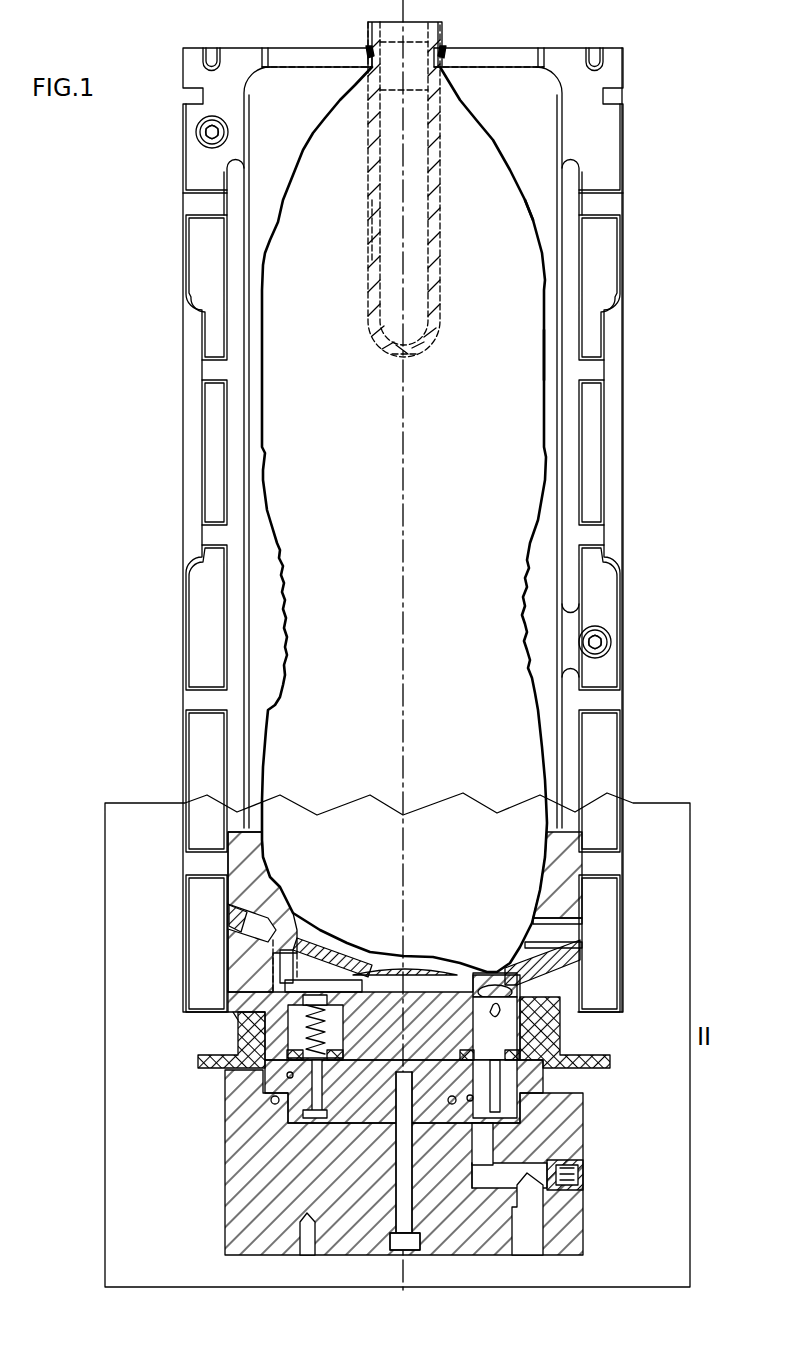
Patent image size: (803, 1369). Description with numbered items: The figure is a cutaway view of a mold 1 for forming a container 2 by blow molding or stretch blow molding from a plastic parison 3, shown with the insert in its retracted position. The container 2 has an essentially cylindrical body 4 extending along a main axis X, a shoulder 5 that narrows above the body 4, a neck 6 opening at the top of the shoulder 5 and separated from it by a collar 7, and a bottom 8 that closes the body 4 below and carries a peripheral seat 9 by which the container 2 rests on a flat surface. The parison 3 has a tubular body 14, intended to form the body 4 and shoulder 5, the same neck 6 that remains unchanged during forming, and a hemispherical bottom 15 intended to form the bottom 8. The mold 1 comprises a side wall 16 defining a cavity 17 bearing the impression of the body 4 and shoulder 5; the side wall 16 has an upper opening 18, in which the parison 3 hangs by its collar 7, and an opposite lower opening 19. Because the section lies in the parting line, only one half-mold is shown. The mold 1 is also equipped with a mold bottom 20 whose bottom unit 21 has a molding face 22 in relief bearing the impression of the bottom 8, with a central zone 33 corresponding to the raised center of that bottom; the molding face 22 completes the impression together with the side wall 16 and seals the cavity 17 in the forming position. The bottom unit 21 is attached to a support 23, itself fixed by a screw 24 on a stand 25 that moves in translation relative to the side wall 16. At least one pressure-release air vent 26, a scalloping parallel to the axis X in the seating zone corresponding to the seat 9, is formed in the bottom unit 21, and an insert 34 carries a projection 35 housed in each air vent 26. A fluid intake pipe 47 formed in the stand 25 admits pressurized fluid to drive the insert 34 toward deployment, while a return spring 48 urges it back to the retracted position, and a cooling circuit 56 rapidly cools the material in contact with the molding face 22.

The mold 1 is at (622, 158).
The container 2 is at (496, 141).
The parison 3 is at (438, 226).
The body 4 is at (542, 358).
The shoulder 5 is at (512, 176).
The neck 6 is at (441, 40).
The collar 7 is at (372, 44).
The bottom 8 is at (368, 946).
The peripheral seat 9 is at (495, 970).
The body of the preform 14 is at (368, 217).
The hemispherical bottom 15 is at (418, 350).
The side wall 16 is at (252, 380).
The cavity 17 is at (379, 468).
The upper opening 18 is at (370, 54).
The lower opening 19 is at (262, 832).
The mold bottom 20 is at (586, 968).
The bottom unit 21 is at (280, 905).
The molding face 22 is at (323, 926).
The support 23 is at (230, 1080).
The screw 24 is at (408, 1210).
The stand 25 is at (230, 1193).
The pressure-release air vent 26 is at (478, 967).
The central zone 33 is at (410, 953).
The insert 34 is at (522, 1028).
The projection 35 is at (480, 1018).
The fluid intake pipe 47 is at (483, 1170).
The return spring 48 is at (316, 1023).
The cooling circuit 56 is at (248, 927).
The main axis X is at (406, 552).